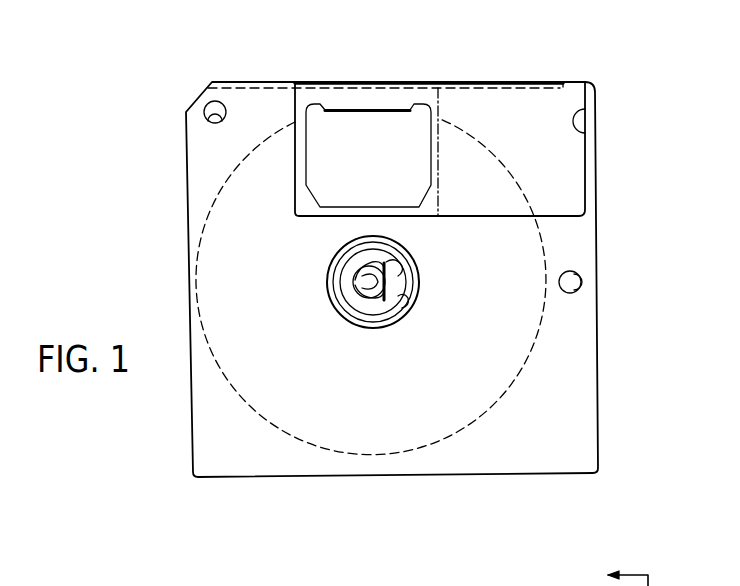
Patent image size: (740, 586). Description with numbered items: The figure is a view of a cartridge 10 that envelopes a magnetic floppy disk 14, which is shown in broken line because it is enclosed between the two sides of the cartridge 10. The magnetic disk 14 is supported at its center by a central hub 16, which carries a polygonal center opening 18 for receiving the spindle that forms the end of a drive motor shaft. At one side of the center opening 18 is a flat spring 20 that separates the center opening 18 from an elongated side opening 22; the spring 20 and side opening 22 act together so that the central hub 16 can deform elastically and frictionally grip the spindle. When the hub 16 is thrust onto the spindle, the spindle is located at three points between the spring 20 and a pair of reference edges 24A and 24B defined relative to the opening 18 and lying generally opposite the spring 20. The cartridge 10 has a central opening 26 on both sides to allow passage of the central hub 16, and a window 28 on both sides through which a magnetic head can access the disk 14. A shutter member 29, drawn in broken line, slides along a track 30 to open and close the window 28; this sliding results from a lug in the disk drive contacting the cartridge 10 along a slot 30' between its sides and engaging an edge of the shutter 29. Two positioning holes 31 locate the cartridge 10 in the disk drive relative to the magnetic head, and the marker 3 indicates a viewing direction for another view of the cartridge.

The cartridge 10 is at (587, 248).
The magnetic floppy disk 14 is at (527, 368).
The central hub 16 is at (416, 273).
The polygonal center opening 18 is at (354, 281).
The flat spring 20 is at (376, 300).
The elongated side opening 22 is at (392, 264).
The reference edge 24A is at (362, 298).
The reference edge 24B is at (373, 262).
The central opening 26 is at (403, 303).
The window 28 is at (316, 162).
The shutter member 29 is at (438, 116).
The track 30 is at (481, 149).
The slot 30' is at (380, 61).
The positioning holes 31 is at (220, 124).
The section line 3-3 viewing direction 3 is at (620, 575).